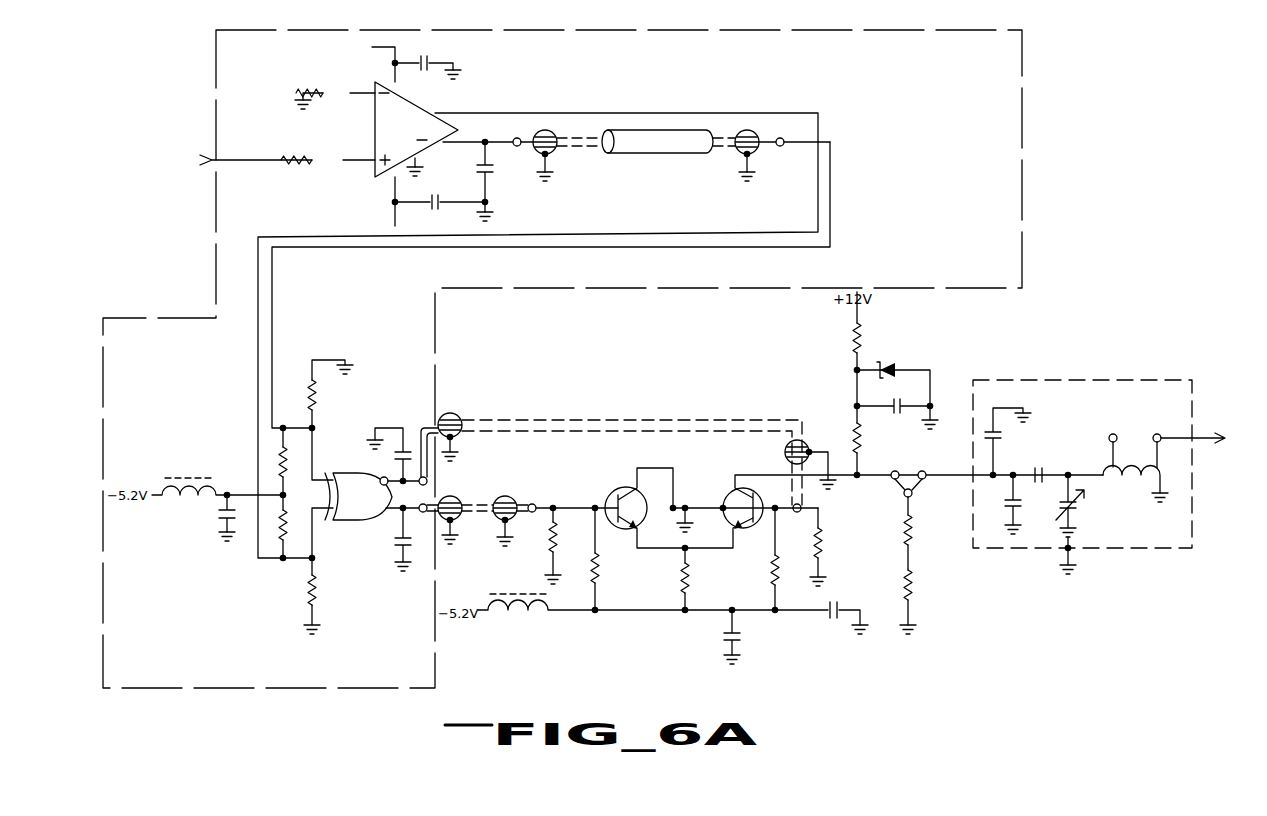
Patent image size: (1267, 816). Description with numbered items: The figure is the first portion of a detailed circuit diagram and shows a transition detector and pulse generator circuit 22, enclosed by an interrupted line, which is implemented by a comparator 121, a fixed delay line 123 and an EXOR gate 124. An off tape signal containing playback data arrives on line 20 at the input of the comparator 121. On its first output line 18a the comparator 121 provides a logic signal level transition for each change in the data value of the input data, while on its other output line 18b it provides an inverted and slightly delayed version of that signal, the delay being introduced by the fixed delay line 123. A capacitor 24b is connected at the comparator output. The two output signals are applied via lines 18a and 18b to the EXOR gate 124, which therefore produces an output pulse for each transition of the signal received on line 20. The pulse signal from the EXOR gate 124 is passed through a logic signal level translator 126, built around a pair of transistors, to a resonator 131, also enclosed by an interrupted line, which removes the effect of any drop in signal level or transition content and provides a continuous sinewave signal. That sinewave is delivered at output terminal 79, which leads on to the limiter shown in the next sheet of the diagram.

The line 20 is at (227, 160).
The transition detector and pulse generator circuit 22 is at (1012, 68).
The comparator 121 is at (422, 106).
The capacitor 24b is at (498, 146).
The first output line 18a is at (703, 113).
The fixed delay line 123 is at (636, 152).
The other output line 18b is at (832, 146).
The EXOR gate 124 is at (351, 480).
The logic signal level translator 126 is at (728, 467).
The resonator 131 is at (1100, 387).
The output terminal to FIG. 6B 79 is at (1162, 432).